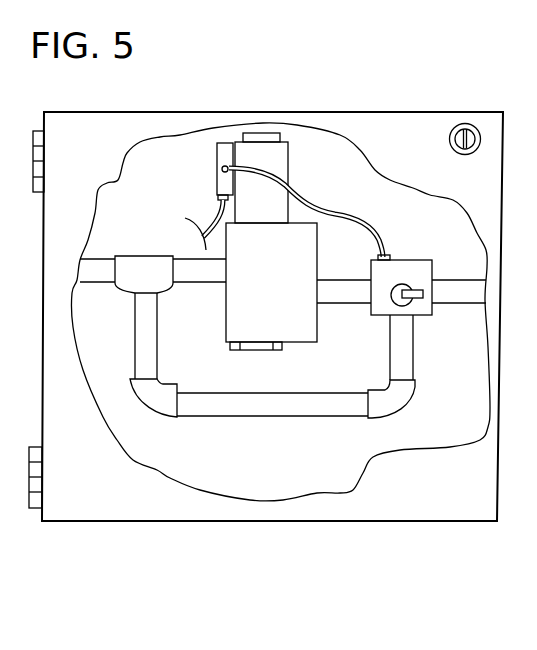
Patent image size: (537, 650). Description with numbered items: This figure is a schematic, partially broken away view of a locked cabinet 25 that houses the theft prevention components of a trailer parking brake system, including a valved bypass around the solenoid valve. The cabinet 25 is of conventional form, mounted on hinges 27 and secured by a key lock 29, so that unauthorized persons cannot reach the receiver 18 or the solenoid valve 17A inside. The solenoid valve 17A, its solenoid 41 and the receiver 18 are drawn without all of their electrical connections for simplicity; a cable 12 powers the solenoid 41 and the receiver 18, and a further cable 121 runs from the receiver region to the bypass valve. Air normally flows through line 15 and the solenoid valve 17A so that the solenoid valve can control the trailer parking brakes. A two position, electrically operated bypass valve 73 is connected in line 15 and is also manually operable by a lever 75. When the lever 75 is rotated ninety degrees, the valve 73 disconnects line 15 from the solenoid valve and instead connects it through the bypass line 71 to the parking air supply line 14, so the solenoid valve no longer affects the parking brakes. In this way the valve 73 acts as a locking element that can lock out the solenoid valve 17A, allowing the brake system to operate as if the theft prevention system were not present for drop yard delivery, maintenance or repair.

The cable 12 is at (206, 224).
The parking air supply line 14 is at (95, 265).
The line 15 is at (457, 288).
The solenoid valve 17A is at (336, 236).
The receiver 18 is at (216, 167).
The cabinet 25 is at (128, 502).
The hinges 27 is at (33, 157).
The key lock 29 is at (466, 124).
The solenoid 41 is at (270, 162).
The bypass line 71 is at (227, 398).
The bypass valve 73 is at (417, 307).
The lever 75 is at (417, 283).
The signal cable 121 is at (303, 202).